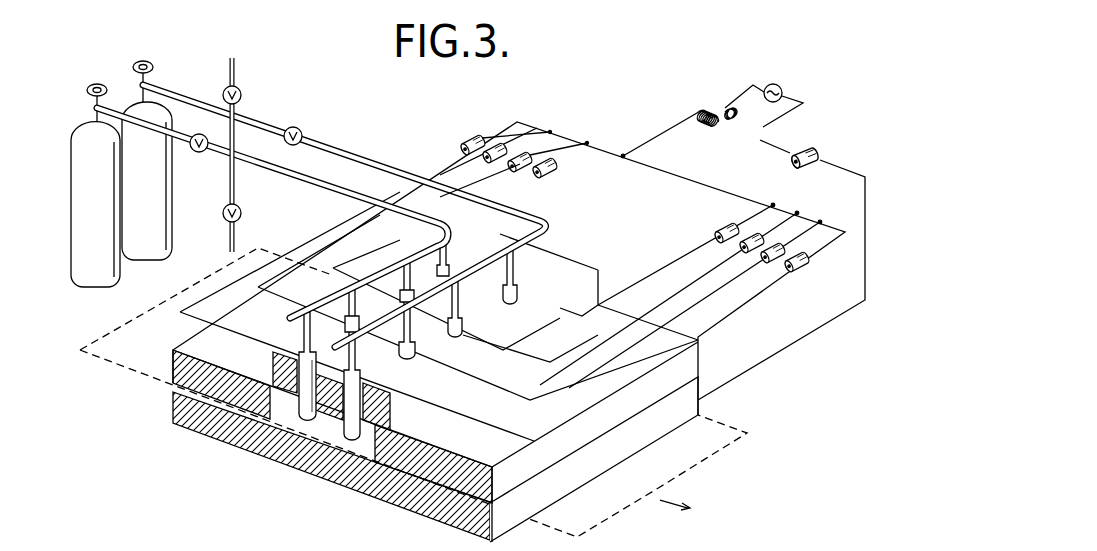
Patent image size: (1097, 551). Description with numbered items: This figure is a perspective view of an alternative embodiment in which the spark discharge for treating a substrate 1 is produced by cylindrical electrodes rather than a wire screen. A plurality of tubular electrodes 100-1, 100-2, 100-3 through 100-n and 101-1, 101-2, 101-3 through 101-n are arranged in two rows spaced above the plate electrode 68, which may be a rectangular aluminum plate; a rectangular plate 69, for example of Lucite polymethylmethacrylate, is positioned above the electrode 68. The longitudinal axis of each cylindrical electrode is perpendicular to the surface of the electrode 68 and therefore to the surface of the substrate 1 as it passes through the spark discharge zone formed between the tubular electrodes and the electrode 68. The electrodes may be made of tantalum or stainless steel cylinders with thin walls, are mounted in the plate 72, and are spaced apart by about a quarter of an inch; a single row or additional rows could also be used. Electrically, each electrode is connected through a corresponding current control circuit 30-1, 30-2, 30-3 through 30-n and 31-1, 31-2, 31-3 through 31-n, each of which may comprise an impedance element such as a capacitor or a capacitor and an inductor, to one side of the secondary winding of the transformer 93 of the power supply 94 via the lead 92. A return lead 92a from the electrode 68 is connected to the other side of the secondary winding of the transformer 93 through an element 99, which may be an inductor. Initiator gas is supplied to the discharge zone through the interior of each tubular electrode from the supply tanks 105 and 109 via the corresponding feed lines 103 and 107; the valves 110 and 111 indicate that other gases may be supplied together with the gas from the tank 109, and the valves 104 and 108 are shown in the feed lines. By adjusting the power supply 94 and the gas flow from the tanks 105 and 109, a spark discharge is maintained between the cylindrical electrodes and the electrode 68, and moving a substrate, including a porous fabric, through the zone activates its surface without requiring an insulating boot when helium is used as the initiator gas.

The substrate 1 is at (106, 392).
The electrode 68 is at (350, 476).
The rectangular plate 69 is at (426, 468).
The plate 72 is at (272, 363).
The lead 92 is at (648, 141).
The return lead 92a is at (772, 148).
The transformer 93 is at (709, 108).
The power supply 94 is at (776, 84).
The element 99 is at (808, 150).
The feed line 103 is at (355, 158).
The valve 104 is at (295, 128).
The supply tank 105 is at (170, 205).
The feed line 107 is at (298, 182).
The valve 108 is at (198, 135).
The supply tank 109 is at (74, 212).
The valve 110 is at (242, 95).
The valve 111 is at (224, 218).
The current control circuit 30-1 is at (804, 265).
The current control circuit 30-2 is at (772, 262).
The current control circuit 30-3 is at (745, 248).
The current control circuit 30-n is at (722, 230).
The current control circuit 31-1 is at (466, 141).
The current control circuit 31-2 is at (498, 146).
The current control circuit 31-3 is at (540, 155).
The current control circuit 31-n is at (556, 174).
The cylindrical electrode 100-1 is at (360, 375).
The cylindrical electrode 100-2 is at (411, 353).
The cylindrical electrode 100-3 is at (460, 328).
The cylindrical electrode 100-n is at (518, 290).
The cylindrical electrode 101-1 is at (304, 422).
The cylindrical electrode 101-2 is at (347, 316).
The cylindrical electrode 101-3 is at (401, 294).
The cylindrical electrode 101-n is at (448, 266).